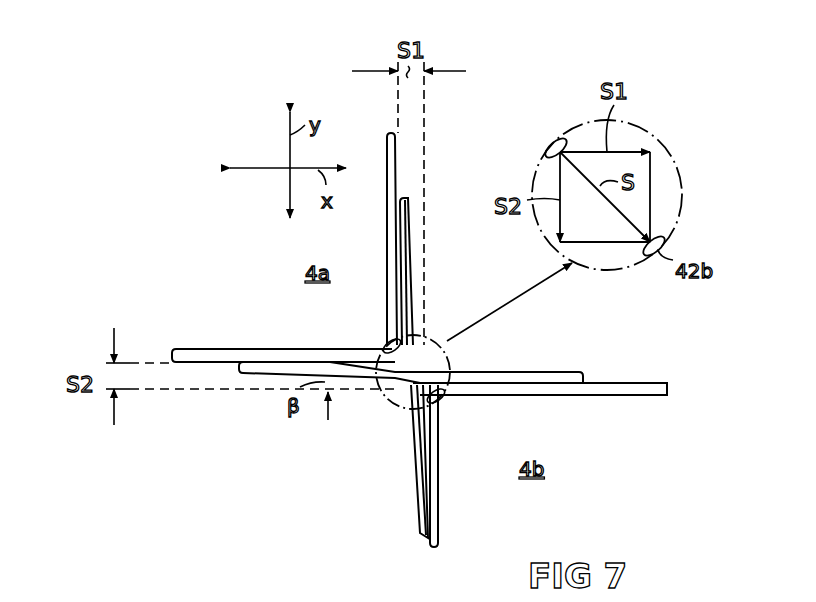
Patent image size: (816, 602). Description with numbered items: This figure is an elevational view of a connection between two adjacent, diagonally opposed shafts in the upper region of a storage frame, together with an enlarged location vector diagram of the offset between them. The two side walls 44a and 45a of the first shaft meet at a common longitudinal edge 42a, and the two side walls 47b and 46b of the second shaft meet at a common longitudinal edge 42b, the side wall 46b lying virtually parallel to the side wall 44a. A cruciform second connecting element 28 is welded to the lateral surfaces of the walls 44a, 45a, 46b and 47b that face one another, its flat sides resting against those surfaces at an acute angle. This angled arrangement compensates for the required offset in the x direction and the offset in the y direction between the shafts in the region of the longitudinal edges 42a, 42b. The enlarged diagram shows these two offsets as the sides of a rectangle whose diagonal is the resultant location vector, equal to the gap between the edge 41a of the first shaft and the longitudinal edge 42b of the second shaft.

The cruciform second connecting element 28 is at (488, 372).
The contact point of first element 41a is at (548, 142).
The longitudinal edge 42a is at (386, 343).
The longitudinal edge 42b is at (440, 402).
The side wall 44a is at (392, 160).
The side wall 45a is at (229, 349).
The side wall 46b is at (439, 512).
The side wall 47b is at (562, 394).